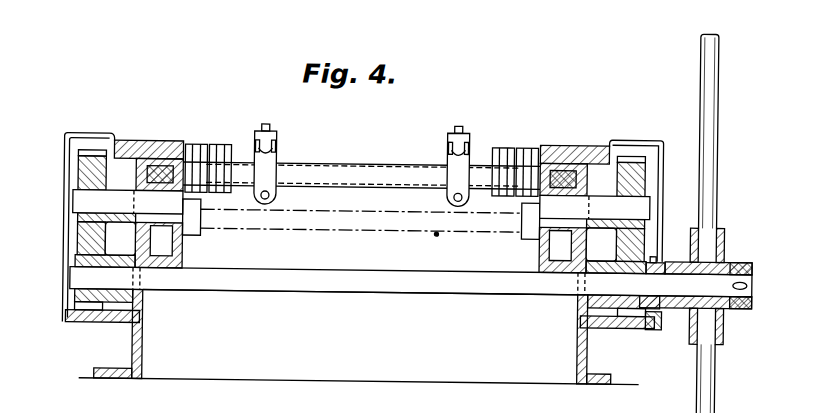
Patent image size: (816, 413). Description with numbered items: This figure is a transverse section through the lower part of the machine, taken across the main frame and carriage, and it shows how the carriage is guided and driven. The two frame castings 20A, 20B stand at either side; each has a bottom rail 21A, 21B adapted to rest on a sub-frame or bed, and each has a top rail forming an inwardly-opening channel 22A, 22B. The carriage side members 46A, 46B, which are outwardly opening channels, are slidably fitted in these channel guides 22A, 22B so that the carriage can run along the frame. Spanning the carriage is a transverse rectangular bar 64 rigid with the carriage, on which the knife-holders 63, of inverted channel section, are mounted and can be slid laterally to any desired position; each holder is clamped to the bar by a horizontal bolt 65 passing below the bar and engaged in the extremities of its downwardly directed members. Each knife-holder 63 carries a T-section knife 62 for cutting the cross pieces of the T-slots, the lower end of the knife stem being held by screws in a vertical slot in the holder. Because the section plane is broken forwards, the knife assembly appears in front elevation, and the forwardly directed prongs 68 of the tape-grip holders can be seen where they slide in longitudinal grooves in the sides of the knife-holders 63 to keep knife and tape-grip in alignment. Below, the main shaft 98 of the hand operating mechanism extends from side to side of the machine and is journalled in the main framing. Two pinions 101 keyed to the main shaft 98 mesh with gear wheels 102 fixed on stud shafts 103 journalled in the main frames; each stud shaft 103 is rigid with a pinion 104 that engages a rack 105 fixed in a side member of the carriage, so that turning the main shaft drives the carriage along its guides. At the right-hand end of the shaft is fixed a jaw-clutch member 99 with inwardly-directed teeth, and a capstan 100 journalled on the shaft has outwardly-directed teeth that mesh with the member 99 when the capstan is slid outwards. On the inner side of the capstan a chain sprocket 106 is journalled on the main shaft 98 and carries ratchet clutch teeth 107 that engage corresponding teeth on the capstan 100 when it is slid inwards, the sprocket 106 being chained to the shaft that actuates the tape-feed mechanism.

The frame casting 20A is at (140, 347).
The frame casting 20B is at (578, 353).
The bottom rail 21A is at (105, 373).
The bottom rail 21B is at (612, 376).
The channel 22A is at (155, 266).
The channel 22B is at (550, 268).
The side member 46A is at (185, 245).
The side member 46B is at (530, 241).
The knife 62 is at (261, 129).
The knife-holder 63 is at (277, 173).
The transverse rectangular bar 64 is at (343, 168).
The horizontal bolt 65 is at (272, 196).
The prong 68 is at (272, 150).
The main shaft 98 is at (339, 288).
The jaw-clutch member 99 is at (735, 255).
The capstan 100 is at (716, 200).
The pinion 101 is at (78, 320).
The gear wheel 102 is at (87, 155).
The stud shaft 103 is at (105, 200).
The pinion 104 is at (160, 158).
The rack 105 is at (155, 164).
The chain sprocket 106 is at (655, 325).
The ratchet clutch teeth 107 is at (672, 250).